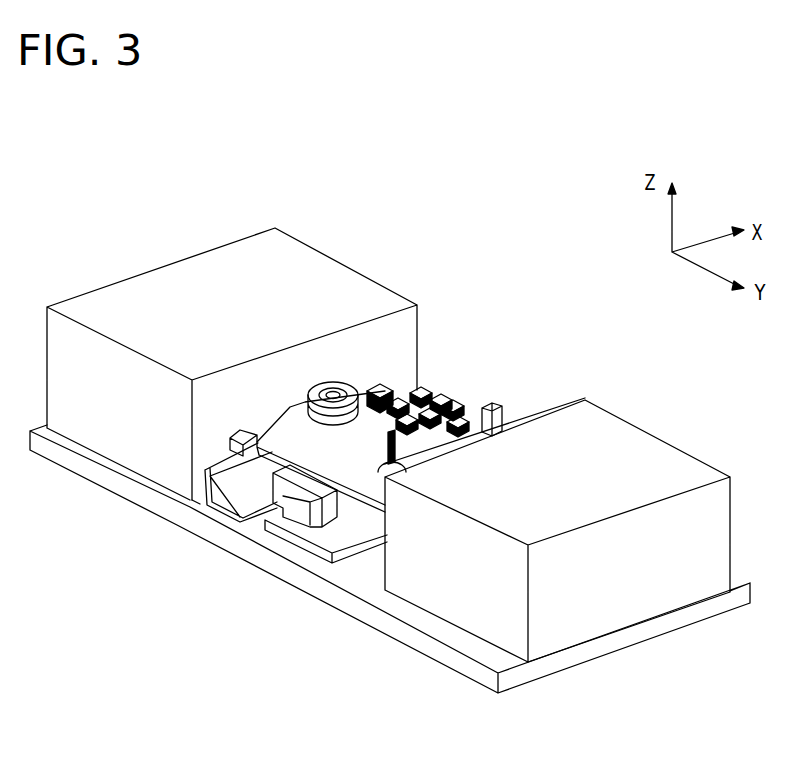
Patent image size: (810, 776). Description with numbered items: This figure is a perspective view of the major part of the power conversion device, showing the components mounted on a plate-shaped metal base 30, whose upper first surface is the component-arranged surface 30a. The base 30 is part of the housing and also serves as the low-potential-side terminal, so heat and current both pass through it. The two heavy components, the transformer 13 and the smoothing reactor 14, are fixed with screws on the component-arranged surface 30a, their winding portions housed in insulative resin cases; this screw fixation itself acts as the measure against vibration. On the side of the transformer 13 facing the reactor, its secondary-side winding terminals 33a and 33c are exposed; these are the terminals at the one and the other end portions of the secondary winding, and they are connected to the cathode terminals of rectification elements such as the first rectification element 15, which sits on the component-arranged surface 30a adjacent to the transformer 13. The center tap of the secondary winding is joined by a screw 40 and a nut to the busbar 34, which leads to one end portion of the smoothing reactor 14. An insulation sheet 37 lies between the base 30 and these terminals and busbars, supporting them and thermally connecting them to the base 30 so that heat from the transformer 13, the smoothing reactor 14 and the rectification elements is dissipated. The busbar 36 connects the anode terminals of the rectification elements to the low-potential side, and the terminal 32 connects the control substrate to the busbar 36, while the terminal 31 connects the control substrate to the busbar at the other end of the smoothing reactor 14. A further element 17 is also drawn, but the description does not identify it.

The transformer 13 is at (313, 272).
The smoothing reactor 14 is at (558, 627).
The first rectification element 15 is at (310, 500).
The terminal pins 17 is at (443, 384).
The base 30 is at (657, 630).
The component-arranged surface 30a is at (467, 643).
The terminal 31 is at (493, 418).
The terminal 32 is at (375, 383).
The secondary-side winding terminal 33a is at (247, 437).
The secondary-side winding terminal 33c is at (369, 380).
The busbar 34 is at (372, 492).
The busbar 36 is at (282, 533).
The insulation sheet 37 is at (207, 510).
The screw 40 is at (333, 380).